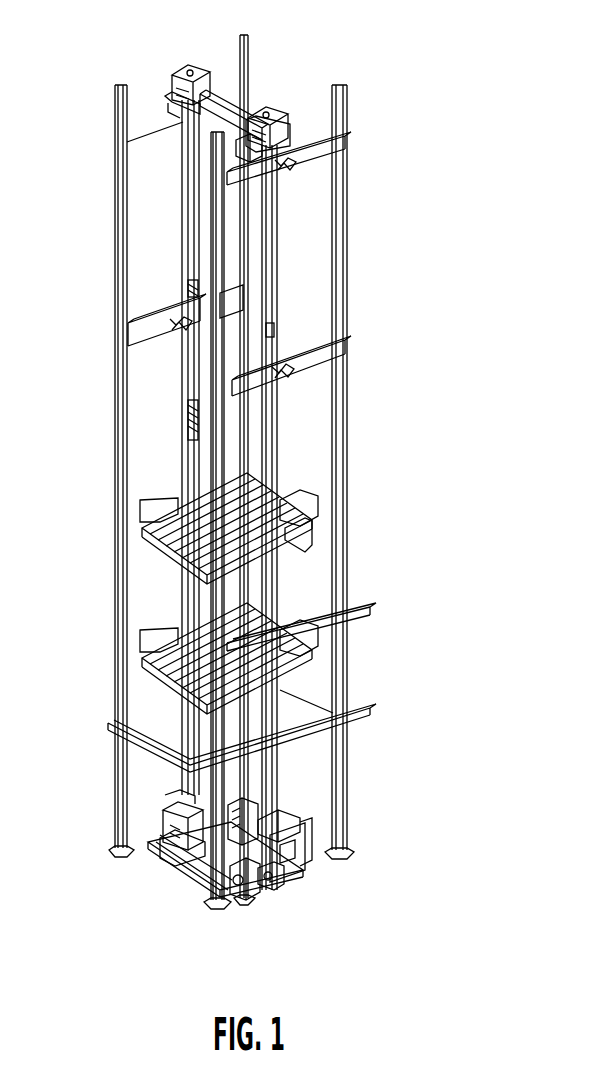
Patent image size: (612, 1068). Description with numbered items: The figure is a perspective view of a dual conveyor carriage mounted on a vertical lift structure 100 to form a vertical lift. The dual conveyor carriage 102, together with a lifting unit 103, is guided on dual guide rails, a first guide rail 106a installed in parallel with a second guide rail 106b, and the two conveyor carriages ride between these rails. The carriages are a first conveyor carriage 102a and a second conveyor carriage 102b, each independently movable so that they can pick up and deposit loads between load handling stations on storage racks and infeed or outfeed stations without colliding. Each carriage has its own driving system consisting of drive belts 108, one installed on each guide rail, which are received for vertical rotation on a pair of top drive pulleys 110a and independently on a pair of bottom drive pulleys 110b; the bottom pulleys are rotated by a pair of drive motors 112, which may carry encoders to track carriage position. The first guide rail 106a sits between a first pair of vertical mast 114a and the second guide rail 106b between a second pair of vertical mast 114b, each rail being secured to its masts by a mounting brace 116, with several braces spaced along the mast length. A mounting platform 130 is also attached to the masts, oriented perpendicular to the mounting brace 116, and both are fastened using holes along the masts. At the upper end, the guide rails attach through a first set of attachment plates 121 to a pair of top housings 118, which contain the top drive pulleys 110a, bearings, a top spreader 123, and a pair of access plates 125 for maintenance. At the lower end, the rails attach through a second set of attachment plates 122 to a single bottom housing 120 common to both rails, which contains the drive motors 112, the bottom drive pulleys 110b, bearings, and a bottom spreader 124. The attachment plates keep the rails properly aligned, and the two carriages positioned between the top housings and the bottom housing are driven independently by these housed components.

The vertical lift structure 100 is at (292, 52).
The dual conveyor carriage 102 is at (135, 525).
The first conveyor carriage 102a is at (305, 512).
The second conveyor carriage 102b is at (302, 652).
The lifting unit 103 is at (308, 545).
The first guide rail 106a is at (196, 252).
The second guide rail 106b is at (248, 517).
The drive belt 108 is at (292, 166).
The top drive pulley 110a is at (292, 118).
The bottom drive pulley 110b is at (268, 886).
The drive motor 112 is at (277, 824).
The first pair of vertical mast 114a is at (185, 313).
The second pair of vertical mast 114b is at (183, 233).
The mounting brace 116 is at (186, 330).
The top housing 118 is at (178, 80).
The bottom housing 120 is at (168, 852).
The first set of attachment plates 121 is at (250, 150).
The second set of attachment plates 122 is at (178, 812).
The top spreader 123 is at (232, 92).
The bottom spreader 124 is at (243, 897).
The access plate 125 is at (178, 66).
The mounting platform 130 is at (128, 740).